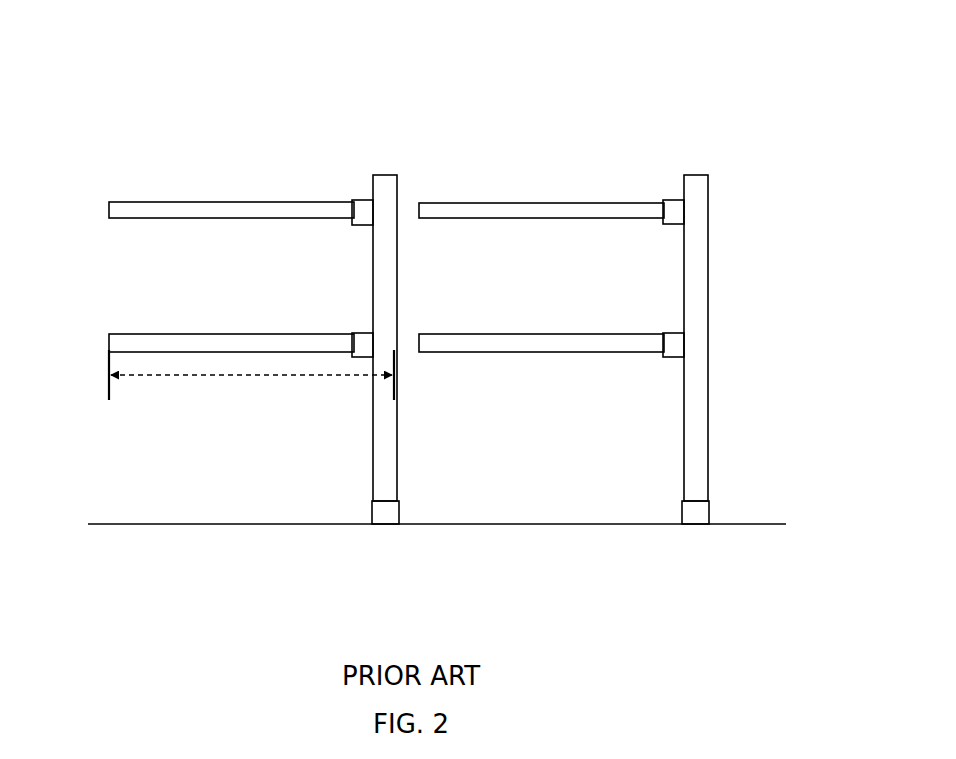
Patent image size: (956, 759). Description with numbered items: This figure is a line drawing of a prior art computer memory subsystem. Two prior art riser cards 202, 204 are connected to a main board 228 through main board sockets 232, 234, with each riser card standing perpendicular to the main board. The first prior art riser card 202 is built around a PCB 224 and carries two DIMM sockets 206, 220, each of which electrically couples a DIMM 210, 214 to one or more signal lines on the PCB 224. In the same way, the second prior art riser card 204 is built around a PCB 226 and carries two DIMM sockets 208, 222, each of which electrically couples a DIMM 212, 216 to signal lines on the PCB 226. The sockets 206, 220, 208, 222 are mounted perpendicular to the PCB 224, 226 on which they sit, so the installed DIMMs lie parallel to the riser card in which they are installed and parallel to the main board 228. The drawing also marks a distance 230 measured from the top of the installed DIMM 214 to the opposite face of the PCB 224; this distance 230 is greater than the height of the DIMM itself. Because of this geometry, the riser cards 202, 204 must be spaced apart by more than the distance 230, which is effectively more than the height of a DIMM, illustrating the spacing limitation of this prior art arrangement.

The prior art riser card 202 is at (385, 117).
The prior art riser card 204 is at (697, 117).
The DIMM socket 206 is at (368, 195).
The DIMM socket 208 is at (678, 196).
The DIMM 210 is at (107, 212).
The DIMM 212 is at (497, 199).
The DIMM 214 is at (107, 342).
The DIMM 216 is at (497, 332).
The DIMM socket 220 is at (368, 330).
The DIMM socket 222 is at (678, 331).
The PCB 224 is at (371, 460).
The PCB 226 is at (682, 460).
The main board 228 is at (325, 531).
The distance 230 is at (237, 399).
The main board socket 232 is at (402, 513).
The main board socket 234 is at (712, 512).